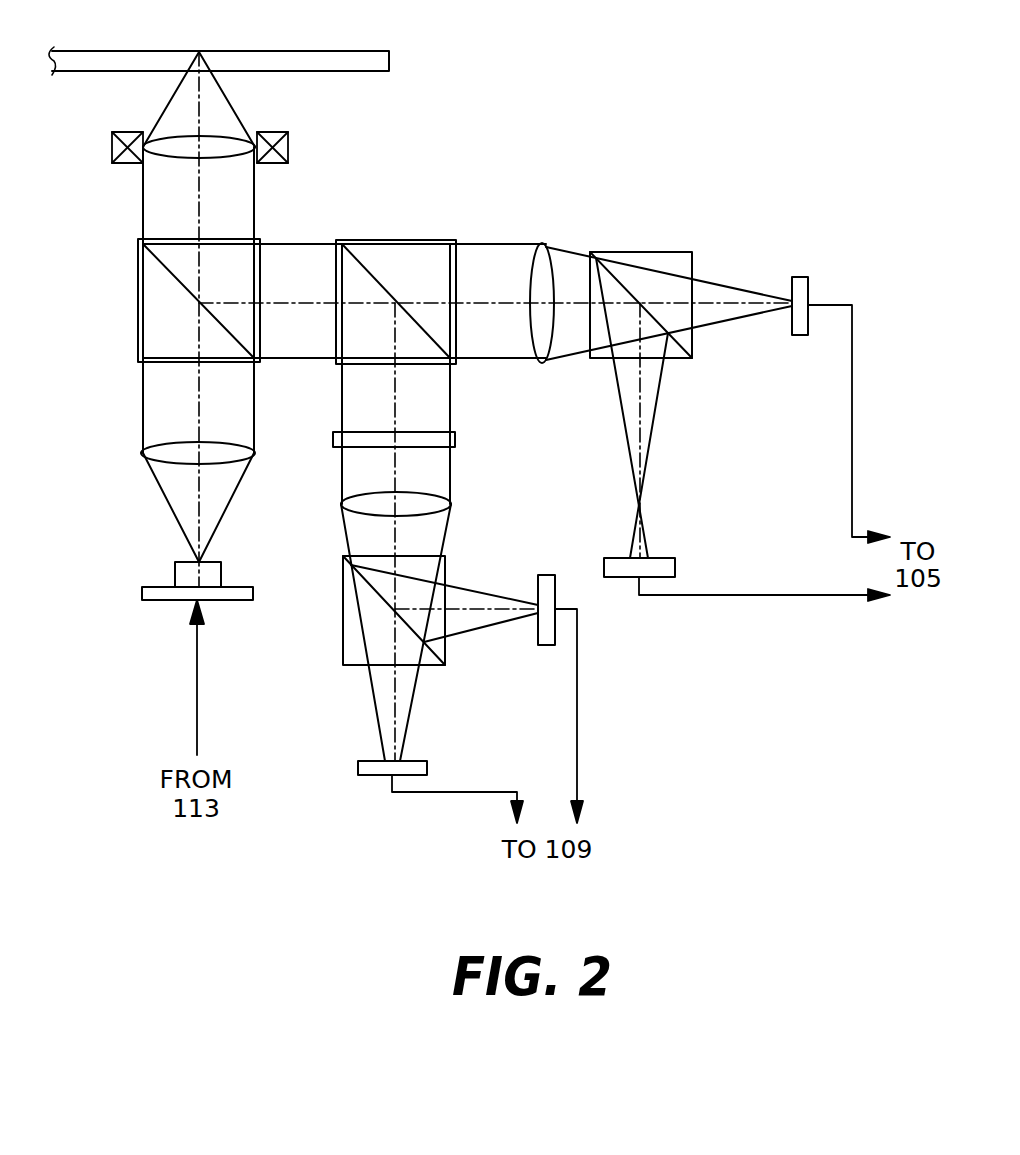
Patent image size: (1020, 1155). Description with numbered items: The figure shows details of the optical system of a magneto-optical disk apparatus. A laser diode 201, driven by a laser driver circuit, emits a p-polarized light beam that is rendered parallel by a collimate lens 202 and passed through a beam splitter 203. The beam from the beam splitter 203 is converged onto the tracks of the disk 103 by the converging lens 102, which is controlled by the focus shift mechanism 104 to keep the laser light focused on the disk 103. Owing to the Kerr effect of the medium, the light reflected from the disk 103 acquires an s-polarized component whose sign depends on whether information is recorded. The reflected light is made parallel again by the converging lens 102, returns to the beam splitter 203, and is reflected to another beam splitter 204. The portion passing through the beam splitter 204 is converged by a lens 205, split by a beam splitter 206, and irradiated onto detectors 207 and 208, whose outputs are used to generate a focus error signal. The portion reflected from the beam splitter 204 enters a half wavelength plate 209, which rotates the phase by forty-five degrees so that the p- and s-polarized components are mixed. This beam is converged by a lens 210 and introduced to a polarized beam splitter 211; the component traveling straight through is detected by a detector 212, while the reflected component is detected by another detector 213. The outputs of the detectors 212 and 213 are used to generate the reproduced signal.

The converging lens 102 is at (168, 147).
The disk 103 is at (134, 52).
The focus shift mechanism 104 is at (270, 137).
The laser diode 201 is at (190, 575).
The collimate lens 202 is at (163, 451).
The beam splitter 203 is at (138, 268).
The beam splitter 204 is at (395, 242).
The lens 205 is at (546, 260).
The beam splitter 206 is at (653, 258).
The detector 207 is at (658, 565).
The detector 208 is at (803, 282).
The ½ wavelength plate 209 is at (435, 440).
The lens 210 is at (427, 506).
The polarized beam splitter 211 is at (442, 575).
The detector 212 is at (380, 765).
The detector 213 is at (545, 625).